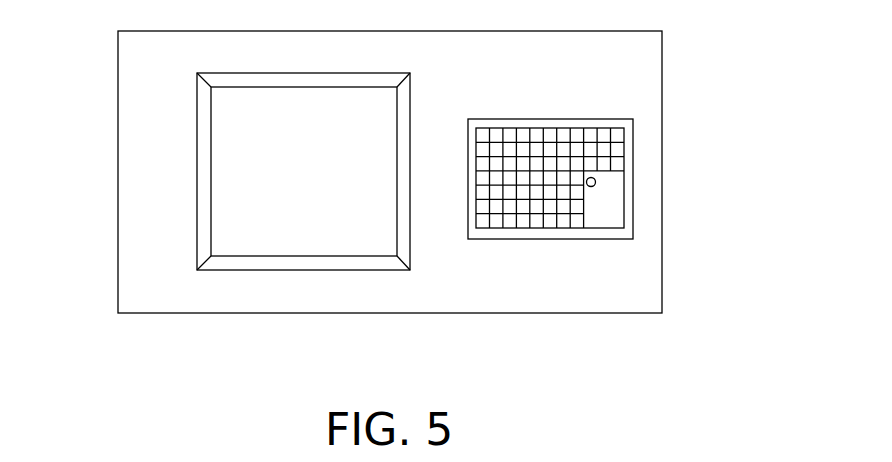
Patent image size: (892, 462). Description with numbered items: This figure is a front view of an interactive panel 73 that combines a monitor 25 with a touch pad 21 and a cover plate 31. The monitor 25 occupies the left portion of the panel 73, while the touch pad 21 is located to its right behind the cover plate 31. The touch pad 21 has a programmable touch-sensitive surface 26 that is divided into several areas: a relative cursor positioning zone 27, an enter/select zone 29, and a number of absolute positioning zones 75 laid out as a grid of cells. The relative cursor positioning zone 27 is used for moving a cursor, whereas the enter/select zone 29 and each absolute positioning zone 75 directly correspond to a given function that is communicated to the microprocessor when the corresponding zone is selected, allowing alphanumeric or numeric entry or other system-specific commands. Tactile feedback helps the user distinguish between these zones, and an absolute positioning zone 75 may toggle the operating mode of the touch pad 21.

The touch pad 21 is at (661, 134).
The monitor 25 is at (219, 106).
The programmable touch-sensitive surface 26 is at (643, 184).
The relative cursor positioning zone 27 is at (610, 190).
The enter/select zone 29 is at (591, 182).
The cover plate 31 is at (610, 125).
The panel 73 is at (165, 143).
The absolute positioning zones 75 is at (555, 218).